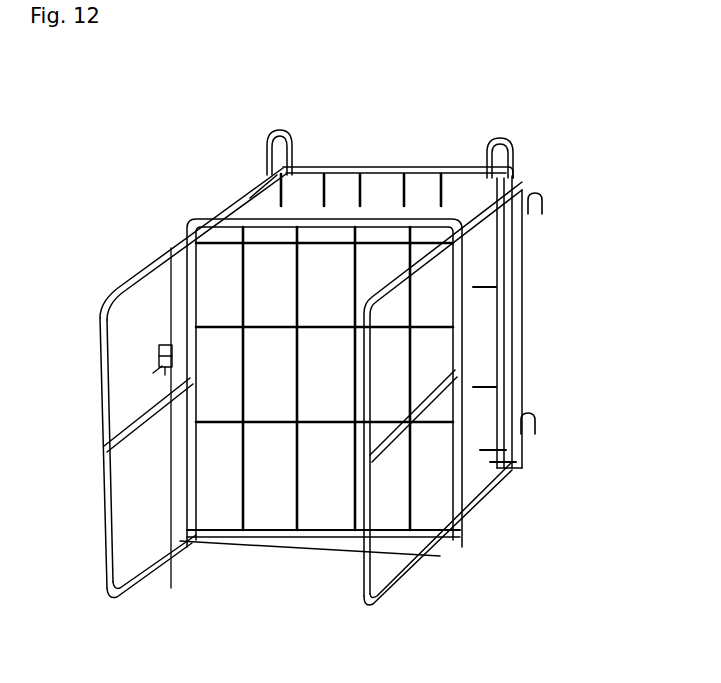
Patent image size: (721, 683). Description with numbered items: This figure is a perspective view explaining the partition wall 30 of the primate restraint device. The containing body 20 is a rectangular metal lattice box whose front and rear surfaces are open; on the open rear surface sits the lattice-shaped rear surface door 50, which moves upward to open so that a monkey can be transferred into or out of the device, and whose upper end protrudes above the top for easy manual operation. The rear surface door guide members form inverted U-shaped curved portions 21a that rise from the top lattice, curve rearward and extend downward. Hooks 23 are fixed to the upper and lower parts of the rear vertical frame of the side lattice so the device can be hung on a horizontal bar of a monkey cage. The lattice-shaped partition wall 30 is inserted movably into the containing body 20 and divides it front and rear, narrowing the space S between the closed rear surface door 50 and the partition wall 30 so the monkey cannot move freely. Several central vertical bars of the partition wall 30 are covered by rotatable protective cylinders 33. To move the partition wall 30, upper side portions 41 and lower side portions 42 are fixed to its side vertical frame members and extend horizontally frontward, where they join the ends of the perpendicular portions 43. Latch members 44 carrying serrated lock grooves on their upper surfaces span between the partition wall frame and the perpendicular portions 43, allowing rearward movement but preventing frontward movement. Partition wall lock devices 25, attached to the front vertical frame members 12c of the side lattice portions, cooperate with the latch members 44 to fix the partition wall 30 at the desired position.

The containing body 20 is at (183, 207).
The inverted U-shaped curved portion 21a is at (278, 152).
The hook 23 is at (542, 196).
The partition wall lock device 25 is at (160, 357).
The partition wall 30 is at (323, 430).
The protective cylinder 33 is at (234, 285).
The upper side portion 41 is at (140, 278).
The lower side portion 42 is at (140, 588).
The perpendicular portion 43 is at (100, 396).
The latch member 44 is at (127, 447).
The rear surface door 50 is at (330, 198).
The vertical frame member 12c is at (166, 488).
The space S is at (482, 330).